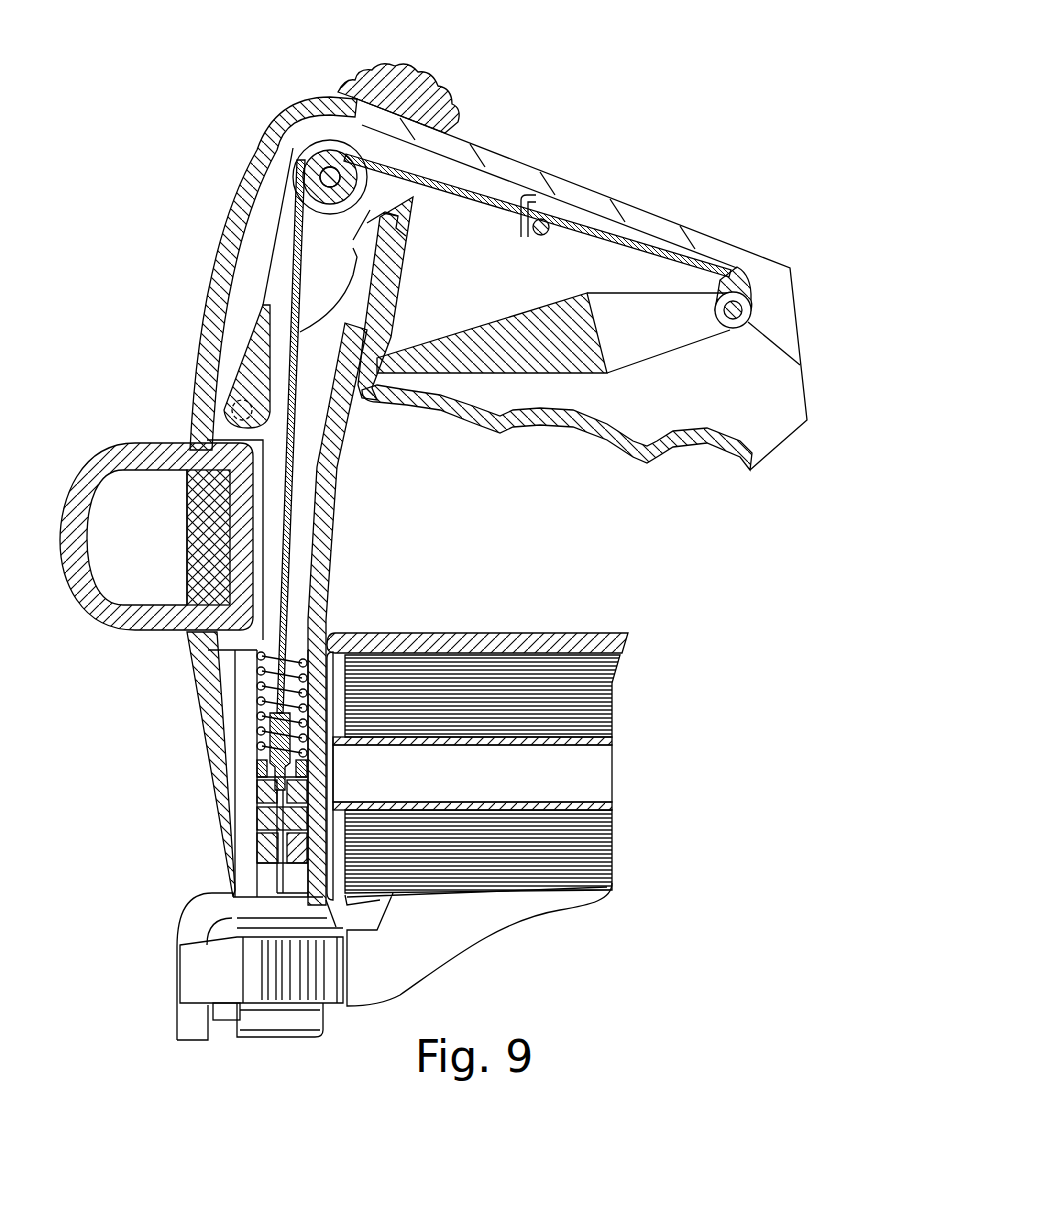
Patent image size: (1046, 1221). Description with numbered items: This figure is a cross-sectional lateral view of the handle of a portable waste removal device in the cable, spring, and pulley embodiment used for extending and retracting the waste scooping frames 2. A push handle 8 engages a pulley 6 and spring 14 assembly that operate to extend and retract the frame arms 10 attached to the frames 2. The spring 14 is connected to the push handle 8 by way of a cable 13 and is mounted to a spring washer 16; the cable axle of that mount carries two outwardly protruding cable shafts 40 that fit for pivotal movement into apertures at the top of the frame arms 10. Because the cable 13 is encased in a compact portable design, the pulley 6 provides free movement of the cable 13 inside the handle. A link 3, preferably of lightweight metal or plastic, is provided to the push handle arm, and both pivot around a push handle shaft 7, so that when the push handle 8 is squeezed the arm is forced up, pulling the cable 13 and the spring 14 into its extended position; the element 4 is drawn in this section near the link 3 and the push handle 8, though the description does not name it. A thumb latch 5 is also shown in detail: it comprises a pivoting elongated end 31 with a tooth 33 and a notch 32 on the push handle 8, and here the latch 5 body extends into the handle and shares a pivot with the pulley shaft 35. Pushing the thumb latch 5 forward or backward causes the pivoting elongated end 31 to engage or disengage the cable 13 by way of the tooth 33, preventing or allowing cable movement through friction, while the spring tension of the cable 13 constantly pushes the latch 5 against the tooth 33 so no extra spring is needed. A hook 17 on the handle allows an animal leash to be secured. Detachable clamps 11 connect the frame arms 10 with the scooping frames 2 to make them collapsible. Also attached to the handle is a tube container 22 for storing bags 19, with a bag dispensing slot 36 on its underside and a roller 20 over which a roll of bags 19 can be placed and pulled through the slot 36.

The waste scooping frame 2 is at (176, 1022).
The link 3 is at (685, 255).
The trigger bar 4 is at (580, 293).
The thumb latch 5 is at (405, 64).
The pulley 6 is at (318, 140).
The push handle shaft 7 is at (735, 292).
The push handle 8 is at (690, 462).
The frame arm 10 is at (252, 787).
The detachable clamp 11 is at (176, 965).
The cable 13 is at (292, 217).
The spring 14 is at (247, 670).
The spring washer 16 is at (252, 767).
The hook 17 is at (97, 442).
The bag 19 is at (562, 910).
The roller 20 is at (612, 745).
The tube container 22 is at (625, 650).
The pivoting elongated end 31 is at (222, 407).
The notch 32 is at (387, 213).
The tooth 33 is at (390, 157).
The pulley shaft 35 is at (313, 170).
The bag dispensing slot 36 is at (367, 902).
The cable shaft 40 is at (252, 822).